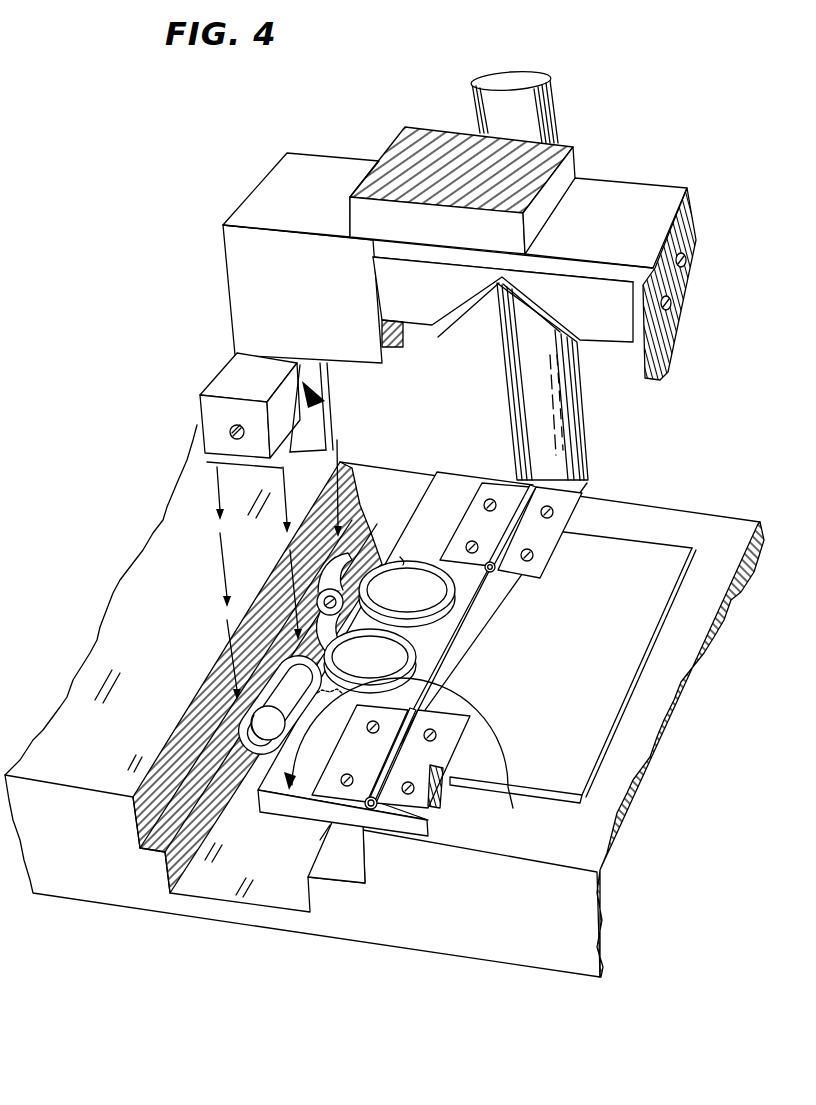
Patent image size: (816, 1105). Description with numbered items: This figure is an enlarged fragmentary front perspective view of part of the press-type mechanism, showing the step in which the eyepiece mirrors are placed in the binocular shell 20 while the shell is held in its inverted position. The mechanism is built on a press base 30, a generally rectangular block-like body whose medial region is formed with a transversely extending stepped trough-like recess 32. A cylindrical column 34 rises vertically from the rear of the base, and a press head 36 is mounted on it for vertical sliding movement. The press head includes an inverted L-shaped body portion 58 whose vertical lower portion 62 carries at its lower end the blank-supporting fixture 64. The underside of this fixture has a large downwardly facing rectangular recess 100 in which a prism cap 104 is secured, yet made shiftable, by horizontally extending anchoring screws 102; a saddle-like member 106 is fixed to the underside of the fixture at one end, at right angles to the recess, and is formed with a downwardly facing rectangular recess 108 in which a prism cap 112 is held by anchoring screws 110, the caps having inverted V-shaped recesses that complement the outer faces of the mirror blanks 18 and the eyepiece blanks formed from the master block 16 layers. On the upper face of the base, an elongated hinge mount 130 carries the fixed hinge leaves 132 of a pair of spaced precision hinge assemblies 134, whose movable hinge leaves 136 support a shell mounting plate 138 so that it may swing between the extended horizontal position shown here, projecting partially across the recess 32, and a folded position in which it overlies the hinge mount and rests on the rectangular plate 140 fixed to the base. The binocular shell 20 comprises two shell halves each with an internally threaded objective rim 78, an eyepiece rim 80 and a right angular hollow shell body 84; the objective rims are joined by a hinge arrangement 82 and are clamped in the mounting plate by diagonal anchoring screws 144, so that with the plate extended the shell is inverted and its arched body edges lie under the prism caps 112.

The prism-like master block 16 is at (292, 437).
The mirror blank 18 is at (446, 337).
The binocular shell 20 is at (306, 562).
The press base 30 is at (463, 901).
The stepped trough-like recess 32 is at (220, 888).
The cylindrical column 34 is at (555, 101).
The press head 36 is at (383, 132).
The body portion 58 is at (440, 140).
The vertical lower portion 62 is at (348, 213).
The blank-supporting fixture 64 is at (695, 188).
The objective rim 78 is at (443, 592).
The eyepiece rim 80 is at (270, 753).
The hinge arrangement 82 is at (313, 597).
The hollow shell body 84 is at (355, 558).
The rectangular recess 100 is at (446, 238).
The anchoring screws 102 is at (671, 300).
The prism cap 104 is at (583, 267).
The saddle-like member 106 is at (234, 368).
The rectangular recess 108 is at (297, 360).
The anchoring screws 110 is at (229, 432).
The prism cap 112 is at (326, 386).
The hinge mount 130 is at (490, 657).
The fixed hinge leaves 132 is at (548, 548).
The precision hinge assemblies 134 is at (572, 500).
The movable hinge leaves 136 is at (472, 514).
The shell mounting plate 138 is at (275, 805).
The rectangular plate 140 is at (560, 784).
The anchoring screws 144 is at (404, 556).